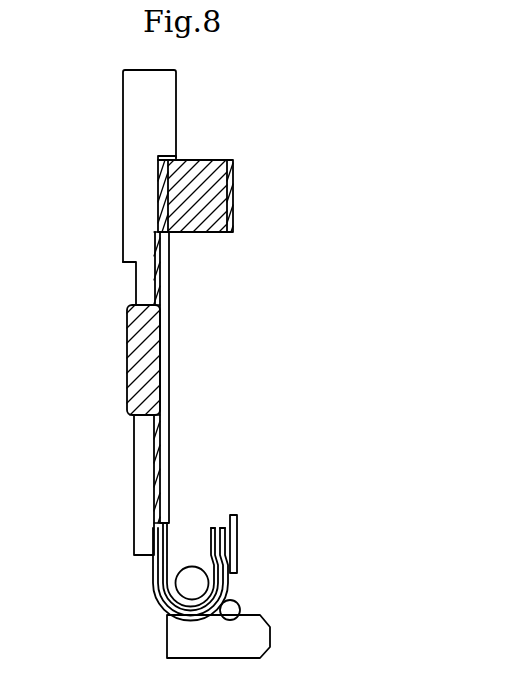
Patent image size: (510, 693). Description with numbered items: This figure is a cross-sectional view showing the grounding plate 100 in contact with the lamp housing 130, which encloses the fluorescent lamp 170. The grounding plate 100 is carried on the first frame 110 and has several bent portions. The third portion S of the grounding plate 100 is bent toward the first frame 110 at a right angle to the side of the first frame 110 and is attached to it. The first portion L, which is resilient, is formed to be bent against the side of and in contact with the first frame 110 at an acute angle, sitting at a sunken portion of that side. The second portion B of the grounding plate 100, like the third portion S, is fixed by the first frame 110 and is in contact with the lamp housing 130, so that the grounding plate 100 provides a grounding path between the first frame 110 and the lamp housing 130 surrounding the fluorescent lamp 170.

The first frame 110 is at (121, 181).
The grounding plate 100 is at (154, 486).
The first portion L is at (235, 187).
The third portion S is at (137, 358).
The second portion B is at (152, 568).
The lamp housing 130 is at (160, 602).
The fluorescent lamp 170 is at (193, 566).